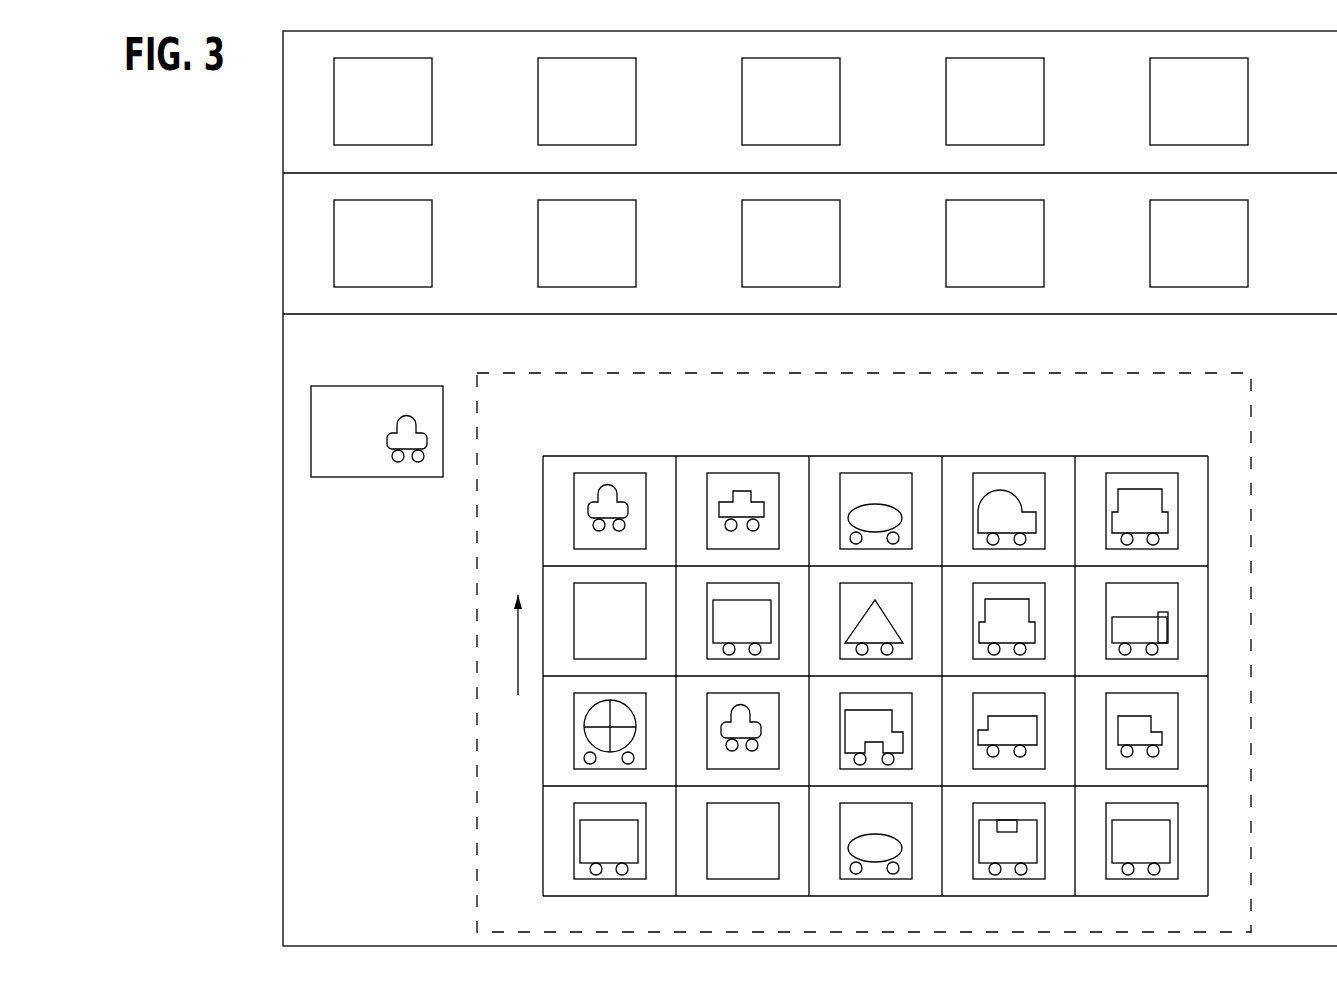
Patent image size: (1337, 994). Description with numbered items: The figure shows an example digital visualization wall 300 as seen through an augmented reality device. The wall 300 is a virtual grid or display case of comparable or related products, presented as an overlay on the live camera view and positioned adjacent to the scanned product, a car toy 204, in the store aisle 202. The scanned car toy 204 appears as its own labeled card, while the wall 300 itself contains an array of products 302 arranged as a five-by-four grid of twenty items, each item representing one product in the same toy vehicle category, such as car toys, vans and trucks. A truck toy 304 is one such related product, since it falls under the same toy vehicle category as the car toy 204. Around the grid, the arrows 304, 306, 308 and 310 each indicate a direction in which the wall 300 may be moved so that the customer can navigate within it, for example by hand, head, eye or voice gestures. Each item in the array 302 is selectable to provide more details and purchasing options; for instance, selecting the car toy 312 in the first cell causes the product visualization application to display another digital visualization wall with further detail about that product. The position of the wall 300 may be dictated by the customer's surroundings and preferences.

The aisle 202 is at (280, 140).
The car toy 204 is at (406, 386).
The digital visualization wall 300 is at (476, 693).
The array of products 302 is at (575, 440).
The truck toy 304 is at (872, 447).
The arrow 306 is at (1216, 628).
The arrow 308 is at (897, 906).
The arrow 310 is at (513, 662).
The car toy 312 is at (627, 472).